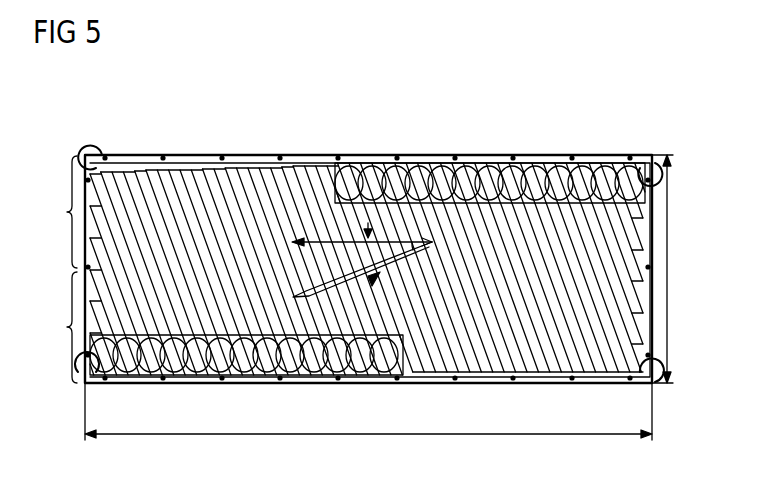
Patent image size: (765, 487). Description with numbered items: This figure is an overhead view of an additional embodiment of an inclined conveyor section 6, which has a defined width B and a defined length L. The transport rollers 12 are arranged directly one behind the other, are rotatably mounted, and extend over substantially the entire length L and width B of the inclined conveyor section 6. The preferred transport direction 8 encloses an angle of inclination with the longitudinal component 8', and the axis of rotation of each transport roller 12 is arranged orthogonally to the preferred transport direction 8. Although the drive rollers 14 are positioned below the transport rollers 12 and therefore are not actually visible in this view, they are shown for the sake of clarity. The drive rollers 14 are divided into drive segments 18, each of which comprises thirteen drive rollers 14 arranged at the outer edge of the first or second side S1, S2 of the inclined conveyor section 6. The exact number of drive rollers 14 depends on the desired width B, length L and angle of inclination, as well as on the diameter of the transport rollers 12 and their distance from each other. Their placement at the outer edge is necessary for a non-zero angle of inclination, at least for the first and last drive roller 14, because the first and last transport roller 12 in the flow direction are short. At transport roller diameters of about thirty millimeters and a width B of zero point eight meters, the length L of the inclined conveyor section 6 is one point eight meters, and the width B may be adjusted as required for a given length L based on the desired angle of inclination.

The inclined conveyor section 6 is at (66, 139).
The transport rollers 12 is at (260, 170).
The drive segments 18 is at (432, 164).
The drive rollers 14 is at (566, 172).
The preferred transport direction 8 is at (363, 274).
The longitudinal component 8' is at (362, 223).
The width B is at (668, 270).
The length L is at (368, 435).
The first side S1 is at (55, 212).
The second side S2 is at (55, 327).